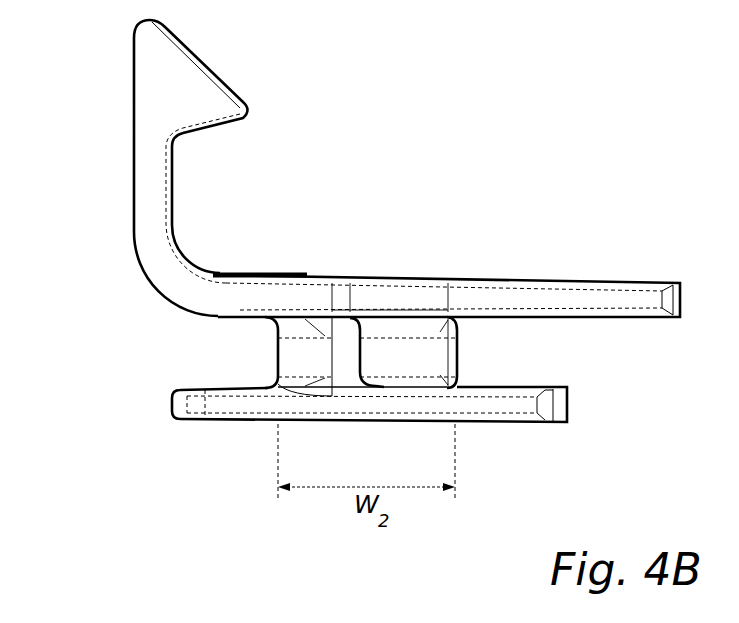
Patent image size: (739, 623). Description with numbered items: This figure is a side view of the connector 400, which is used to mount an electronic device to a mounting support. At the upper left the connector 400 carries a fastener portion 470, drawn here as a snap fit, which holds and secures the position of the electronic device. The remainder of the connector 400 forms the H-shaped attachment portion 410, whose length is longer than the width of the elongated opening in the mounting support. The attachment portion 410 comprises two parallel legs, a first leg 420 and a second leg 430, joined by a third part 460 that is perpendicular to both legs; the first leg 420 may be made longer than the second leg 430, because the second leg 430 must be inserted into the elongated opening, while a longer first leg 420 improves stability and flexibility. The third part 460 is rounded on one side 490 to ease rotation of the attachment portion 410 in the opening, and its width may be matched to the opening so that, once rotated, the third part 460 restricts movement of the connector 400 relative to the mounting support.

The connector 400 is at (472, 138).
The H-shaped attachment portion 410 is at (542, 348).
The first leg 420 is at (595, 298).
The second leg 430 is at (523, 403).
The third part 460 is at (370, 350).
The fastener portion 470 is at (150, 86).
The rounded side 490 is at (275, 350).